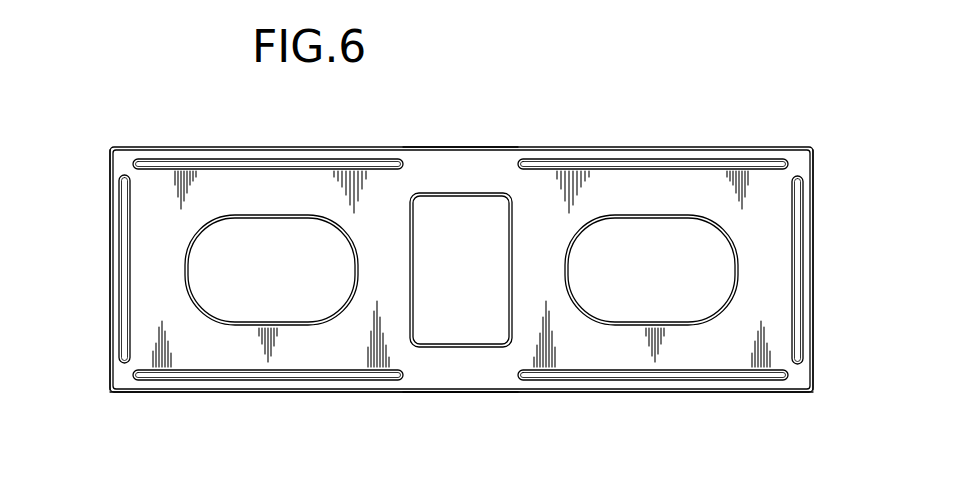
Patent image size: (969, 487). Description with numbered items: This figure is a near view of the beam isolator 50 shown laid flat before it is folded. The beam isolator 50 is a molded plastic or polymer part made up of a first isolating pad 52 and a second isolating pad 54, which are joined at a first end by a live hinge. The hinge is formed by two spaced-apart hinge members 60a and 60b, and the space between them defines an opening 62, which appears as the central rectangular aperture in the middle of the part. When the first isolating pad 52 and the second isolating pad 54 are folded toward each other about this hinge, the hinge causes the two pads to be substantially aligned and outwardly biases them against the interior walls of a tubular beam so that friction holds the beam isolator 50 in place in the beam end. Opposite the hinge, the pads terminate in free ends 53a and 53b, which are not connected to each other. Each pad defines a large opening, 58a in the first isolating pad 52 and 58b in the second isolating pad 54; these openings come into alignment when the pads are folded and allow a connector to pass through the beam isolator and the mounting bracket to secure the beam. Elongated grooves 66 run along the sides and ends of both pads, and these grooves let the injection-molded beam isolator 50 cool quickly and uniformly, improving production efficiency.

The beam isolator 50 is at (725, 62).
The first isolating pad 52 is at (268, 390).
The free end of first isolating pad 53a is at (108, 242).
The free end of second isolating pad 53b is at (817, 260).
The second isolating pad 54 is at (660, 394).
The opening in first isolating pad 58a is at (273, 257).
The opening in second isolating pad 58b is at (628, 257).
The hinge member 60a is at (458, 173).
The hinge member 60b is at (455, 370).
The opening 62 is at (472, 233).
The grooves 66 is at (167, 159).